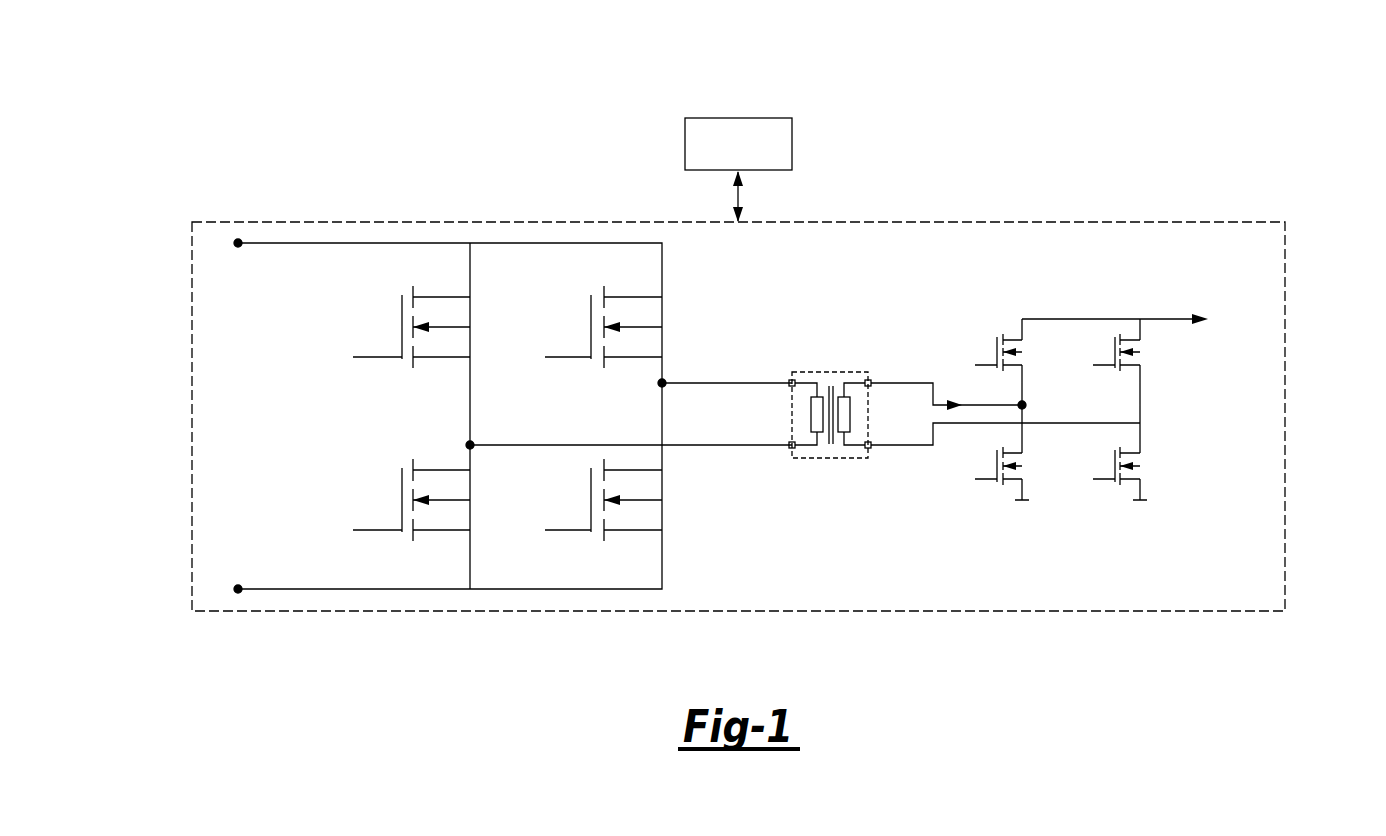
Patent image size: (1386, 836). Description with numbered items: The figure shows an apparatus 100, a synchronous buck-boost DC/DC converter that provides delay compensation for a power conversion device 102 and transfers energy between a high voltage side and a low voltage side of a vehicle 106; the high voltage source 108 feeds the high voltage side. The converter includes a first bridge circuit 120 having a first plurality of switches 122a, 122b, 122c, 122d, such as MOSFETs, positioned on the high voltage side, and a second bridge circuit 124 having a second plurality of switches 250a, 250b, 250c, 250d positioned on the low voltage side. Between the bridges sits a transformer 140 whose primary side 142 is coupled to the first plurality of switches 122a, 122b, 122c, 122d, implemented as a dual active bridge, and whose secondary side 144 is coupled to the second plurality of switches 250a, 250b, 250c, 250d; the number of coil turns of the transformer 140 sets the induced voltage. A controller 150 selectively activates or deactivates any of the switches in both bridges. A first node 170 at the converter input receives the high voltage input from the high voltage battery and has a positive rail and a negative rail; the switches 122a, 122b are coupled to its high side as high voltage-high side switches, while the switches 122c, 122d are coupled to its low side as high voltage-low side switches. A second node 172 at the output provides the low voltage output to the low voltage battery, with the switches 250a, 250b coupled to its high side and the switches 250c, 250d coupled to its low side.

The apparatus 100 is at (1222, 158).
The power conversion device 102 is at (298, 145).
The vehicle 106 is at (1329, 430).
The high-voltage source 108 is at (111, 390).
The first bridge circuit 120 is at (398, 230).
The switch 122a is at (402, 321).
The switch 122b is at (591, 321).
The switch 122c is at (402, 493).
The switch 122d is at (591, 493).
The second bridge circuit 124 is at (1007, 204).
The transformer 140 is at (830, 357).
The primary side 142 is at (810, 405).
The secondary side 144 is at (851, 405).
The controller 150 is at (738, 118).
The first node 170 is at (216, 390).
The second node 172 is at (1207, 438).
The switch 250a is at (1010, 340).
The switch 250b is at (1130, 340).
The switch 250c is at (1010, 480).
The switch 250d is at (1130, 480).